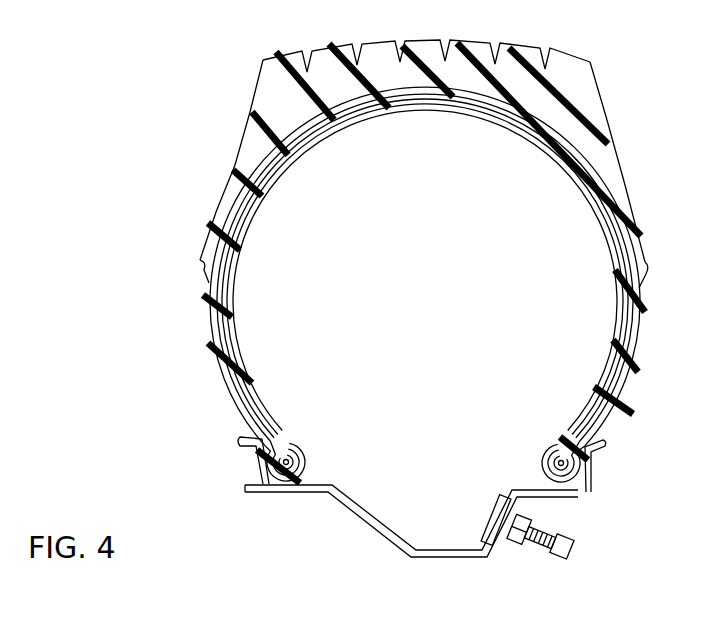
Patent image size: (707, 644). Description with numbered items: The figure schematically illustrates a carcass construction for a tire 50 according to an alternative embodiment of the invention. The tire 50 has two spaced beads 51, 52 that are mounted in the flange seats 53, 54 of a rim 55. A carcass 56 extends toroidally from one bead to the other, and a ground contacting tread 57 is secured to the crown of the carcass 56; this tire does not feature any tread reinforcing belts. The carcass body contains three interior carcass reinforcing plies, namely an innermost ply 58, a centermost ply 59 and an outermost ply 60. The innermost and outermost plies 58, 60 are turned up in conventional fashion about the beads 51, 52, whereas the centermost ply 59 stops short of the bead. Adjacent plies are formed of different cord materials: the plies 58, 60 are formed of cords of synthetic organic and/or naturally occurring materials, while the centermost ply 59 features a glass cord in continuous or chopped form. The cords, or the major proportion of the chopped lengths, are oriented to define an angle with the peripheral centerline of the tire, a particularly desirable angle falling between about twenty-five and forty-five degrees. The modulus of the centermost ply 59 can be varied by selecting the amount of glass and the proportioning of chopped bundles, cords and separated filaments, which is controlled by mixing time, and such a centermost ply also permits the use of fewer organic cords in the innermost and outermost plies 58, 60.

The tire 50 is at (234, 160).
The bead 51 is at (260, 484).
The bead 52 is at (591, 460).
The flange seat 53 is at (589, 493).
The flange seat 54 is at (263, 492).
The rim 55 is at (497, 566).
The carcass 56 is at (192, 285).
The ground contacting tread 57 is at (592, 62).
The innermost carcass reinforcing ply 58 is at (612, 256).
The centermost carcass reinforcing ply 59 is at (630, 208).
The outermost carcass reinforcing ply 60 is at (646, 240).